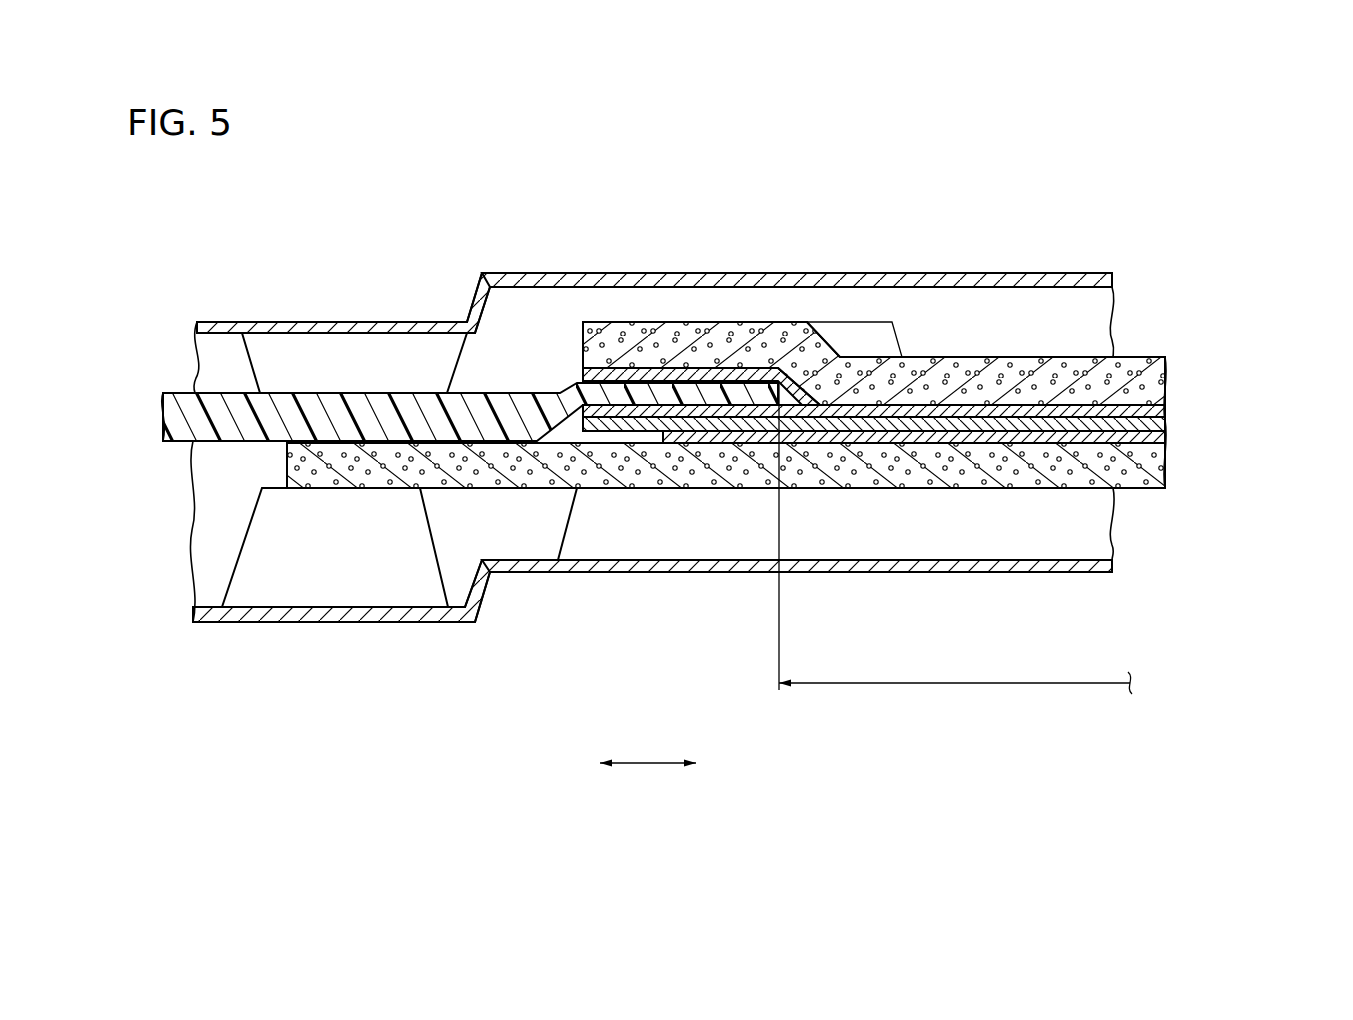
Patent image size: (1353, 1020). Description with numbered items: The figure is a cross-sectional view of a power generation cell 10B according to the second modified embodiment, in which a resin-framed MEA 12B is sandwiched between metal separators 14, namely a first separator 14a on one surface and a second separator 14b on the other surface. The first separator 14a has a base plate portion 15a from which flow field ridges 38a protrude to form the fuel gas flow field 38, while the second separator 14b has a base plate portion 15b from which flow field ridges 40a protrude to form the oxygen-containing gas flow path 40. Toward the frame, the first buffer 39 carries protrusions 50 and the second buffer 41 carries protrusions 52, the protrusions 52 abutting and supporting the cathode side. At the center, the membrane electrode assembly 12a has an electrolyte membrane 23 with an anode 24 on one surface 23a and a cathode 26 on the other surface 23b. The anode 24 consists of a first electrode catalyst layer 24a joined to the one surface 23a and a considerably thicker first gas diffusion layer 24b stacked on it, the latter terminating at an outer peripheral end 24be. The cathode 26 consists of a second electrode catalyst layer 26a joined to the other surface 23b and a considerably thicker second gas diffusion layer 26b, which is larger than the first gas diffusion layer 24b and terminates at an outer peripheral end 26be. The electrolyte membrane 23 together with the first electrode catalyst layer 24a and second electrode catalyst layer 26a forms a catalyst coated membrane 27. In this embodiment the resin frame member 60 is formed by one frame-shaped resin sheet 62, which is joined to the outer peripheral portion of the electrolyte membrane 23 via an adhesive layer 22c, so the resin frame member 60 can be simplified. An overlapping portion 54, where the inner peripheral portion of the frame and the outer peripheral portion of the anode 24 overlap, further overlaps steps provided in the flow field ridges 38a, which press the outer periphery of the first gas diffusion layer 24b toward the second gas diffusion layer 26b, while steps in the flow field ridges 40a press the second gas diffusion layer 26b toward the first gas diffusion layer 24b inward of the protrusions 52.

The power generation cell 10B is at (277, 230).
The metal separator 14 is at (652, 424).
The first separator 14a is at (655, 263).
The second separator 14b is at (675, 585).
The base plate portion 15a is at (835, 278).
The base plate portion 15b is at (617, 570).
The fuel gas flow field 38 is at (1125, 319).
The flow field ridge 38a is at (1055, 300).
The oxygen-containing gas flow path 40 is at (1128, 536).
The flow field ridge 40a is at (1082, 548).
The protrusion 50 is at (258, 362).
The protrusion 52 is at (245, 568).
The first buffer 39 is at (238, 370).
The second buffer 41 is at (227, 552).
The resin frame member 60 is at (151, 413).
The frame-shaped resin sheet 62 is at (330, 403).
The adhesive layer 22c is at (705, 378).
The electrolyte membrane 23 is at (1165, 422).
The one surface 23a is at (940, 418).
The other surface 23b is at (950, 433).
The anode 24 is at (1231, 356).
The first electrode catalyst layer 24a is at (1165, 412).
The first gas diffusion layer 24b is at (1163, 373).
The outer peripheral end 24be is at (582, 354).
The cathode 26 is at (1231, 438).
The second electrode catalyst layer 26a is at (1160, 437).
The second gas diffusion layer 26b is at (1155, 470).
The outer peripheral end 26be is at (287, 462).
The membrane electrode assembly 12a is at (1266, 357).
The resin-framed MEA 12B is at (989, 347).
The catalyst coated membrane 27 is at (1078, 393).
The overlapping portion 54 is at (740, 345).